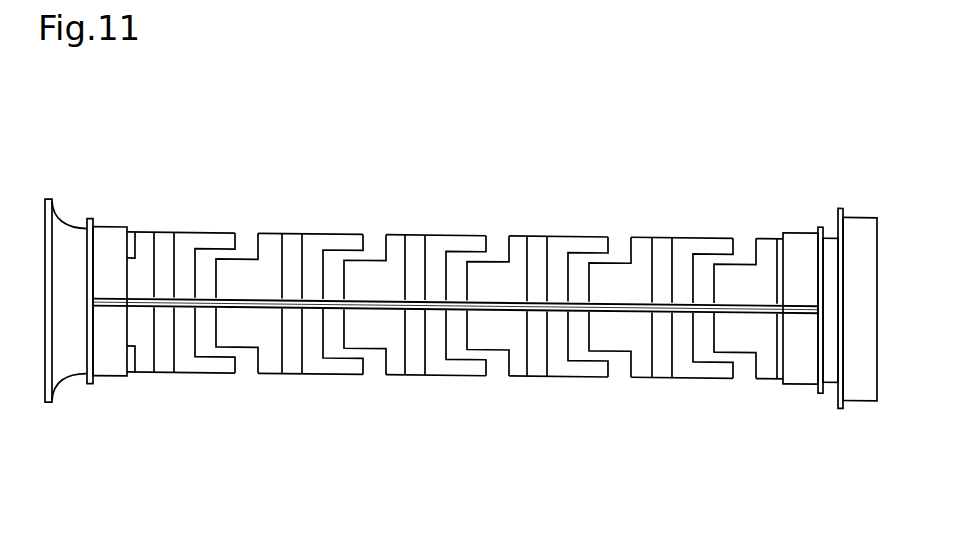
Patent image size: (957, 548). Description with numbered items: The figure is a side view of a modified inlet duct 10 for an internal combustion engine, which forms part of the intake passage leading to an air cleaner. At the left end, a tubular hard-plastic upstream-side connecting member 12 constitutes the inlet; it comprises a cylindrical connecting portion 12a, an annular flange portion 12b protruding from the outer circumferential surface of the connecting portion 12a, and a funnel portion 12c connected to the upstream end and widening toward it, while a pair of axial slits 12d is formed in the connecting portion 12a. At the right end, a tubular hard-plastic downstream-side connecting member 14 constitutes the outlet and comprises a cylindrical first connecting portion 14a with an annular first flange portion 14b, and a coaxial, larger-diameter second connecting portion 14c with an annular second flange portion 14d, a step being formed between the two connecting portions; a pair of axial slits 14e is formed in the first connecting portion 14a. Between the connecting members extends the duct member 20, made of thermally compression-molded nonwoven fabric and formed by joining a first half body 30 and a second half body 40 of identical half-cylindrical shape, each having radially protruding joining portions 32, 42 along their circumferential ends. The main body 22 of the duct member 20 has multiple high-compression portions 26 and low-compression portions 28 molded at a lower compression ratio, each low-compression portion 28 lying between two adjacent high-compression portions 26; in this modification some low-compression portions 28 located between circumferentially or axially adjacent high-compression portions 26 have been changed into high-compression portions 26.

The inlet duct 10 is at (835, 125).
The upstream-side connecting member 12 is at (92, 203).
The connecting portion 12a is at (112, 380).
The flange portion 12b is at (87, 385).
The funnel portion 12c is at (45, 403).
The slits 12d is at (93, 310).
The downstream-side connecting member 14 is at (831, 204).
The first connecting portion 14a is at (797, 385).
The first flange portion 14b is at (820, 395).
The second connecting portion 14c is at (855, 400).
The second flange portion 14d is at (842, 408).
The slits 14e is at (793, 313).
The duct member 20 is at (402, 232).
The main body 22 is at (355, 233).
The high-compression portions 26 is at (687, 240).
The low-compression portions 28 is at (540, 242).
The first half body 30 is at (488, 380).
The joining portions 32 is at (291, 302).
The second half body 40 is at (484, 236).
The joining portions 42 is at (291, 302).